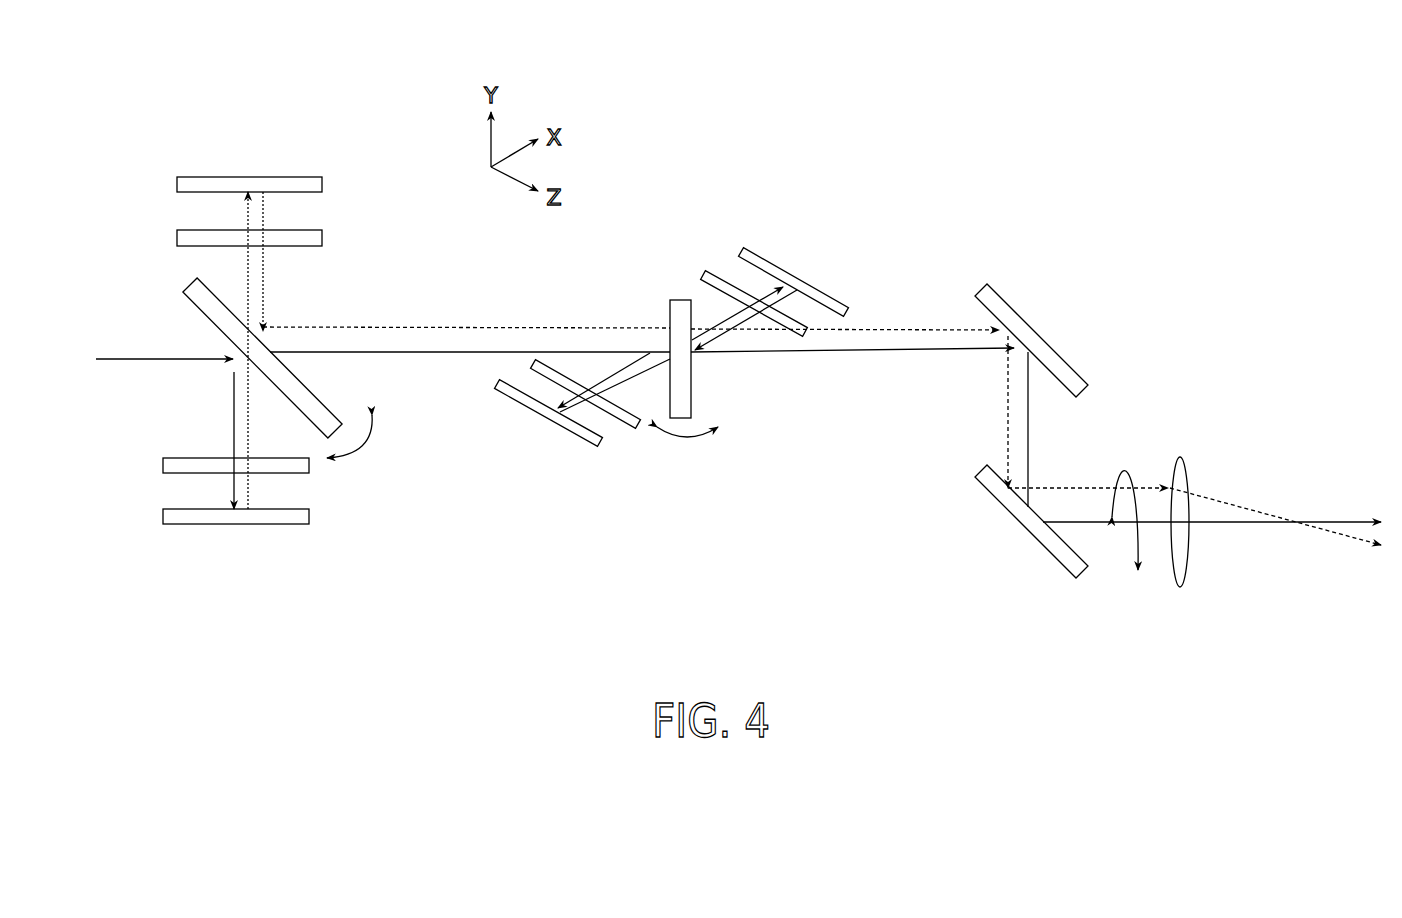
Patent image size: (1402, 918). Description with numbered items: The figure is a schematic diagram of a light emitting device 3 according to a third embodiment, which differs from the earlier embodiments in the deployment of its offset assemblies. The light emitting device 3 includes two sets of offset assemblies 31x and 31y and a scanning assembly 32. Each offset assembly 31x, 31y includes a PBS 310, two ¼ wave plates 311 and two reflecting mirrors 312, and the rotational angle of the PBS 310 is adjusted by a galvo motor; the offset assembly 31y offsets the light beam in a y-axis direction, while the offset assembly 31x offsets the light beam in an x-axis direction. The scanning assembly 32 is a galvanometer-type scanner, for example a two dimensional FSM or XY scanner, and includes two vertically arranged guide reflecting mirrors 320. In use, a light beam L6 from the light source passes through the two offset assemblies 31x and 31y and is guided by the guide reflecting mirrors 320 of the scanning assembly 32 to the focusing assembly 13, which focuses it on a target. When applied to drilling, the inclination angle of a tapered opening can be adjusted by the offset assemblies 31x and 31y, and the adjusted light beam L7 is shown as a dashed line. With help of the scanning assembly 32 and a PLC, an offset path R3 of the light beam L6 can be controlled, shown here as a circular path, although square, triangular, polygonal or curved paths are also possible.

The light emitting device 3 is at (1234, 211).
The offset assembly 31y is at (270, 134).
The offset assembly 31x is at (761, 217).
The scanning assembly 32 is at (1071, 291).
The PBS 310 is at (185, 291).
The ¼ wave plate 311 is at (177, 238).
The reflecting mirror 312 is at (177, 183).
The guide reflecting mirror 320 is at (1063, 368).
The focusing assembly 13 is at (1186, 463).
The offset path R3 is at (1130, 467).
The light beam L6 is at (152, 358).
The light beam after adjustment L7 is at (397, 328).